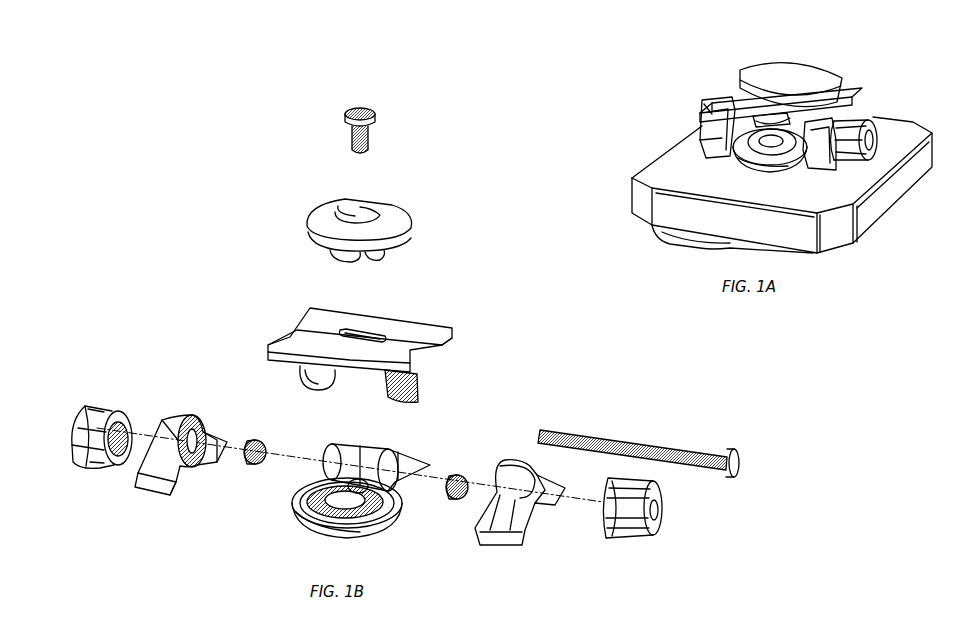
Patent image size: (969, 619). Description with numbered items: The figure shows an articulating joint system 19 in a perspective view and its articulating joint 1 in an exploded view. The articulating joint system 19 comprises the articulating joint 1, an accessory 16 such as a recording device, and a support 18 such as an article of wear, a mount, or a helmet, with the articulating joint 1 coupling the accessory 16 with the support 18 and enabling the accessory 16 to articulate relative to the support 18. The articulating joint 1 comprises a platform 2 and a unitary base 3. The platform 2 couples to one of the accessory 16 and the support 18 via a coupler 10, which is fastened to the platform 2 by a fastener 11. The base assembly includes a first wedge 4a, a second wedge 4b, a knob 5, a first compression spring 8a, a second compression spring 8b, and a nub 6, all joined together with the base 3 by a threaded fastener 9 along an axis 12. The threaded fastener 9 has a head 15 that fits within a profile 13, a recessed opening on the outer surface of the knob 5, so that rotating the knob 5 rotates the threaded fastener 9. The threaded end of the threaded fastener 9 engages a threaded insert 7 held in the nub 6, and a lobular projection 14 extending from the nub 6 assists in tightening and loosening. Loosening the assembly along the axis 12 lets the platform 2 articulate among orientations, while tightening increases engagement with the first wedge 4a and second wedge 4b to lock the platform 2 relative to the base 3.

In FIG. 1A, the articulating joint 1 is at (860, 100).
In FIG. 1B, the articulating joint 1 is at (134, 128).
In FIG. 1A, the platform 2 is at (781, 105).
In FIG. 1B, the platform 2 is at (397, 320).
In FIG. 1A, the base 3 is at (770, 150).
In FIG. 1B, the base 3 is at (403, 452).
In FIG. 1A, the first wedge 4a is at (717, 127).
In FIG. 1B, the first wedge 4a is at (188, 413).
In FIG. 1A, the second wedge 4b is at (819, 144).
In FIG. 1B, the second wedge 4b is at (530, 518).
In FIG. 1A, the knob 5 is at (854, 140).
In FIG. 1B, the knob 5 is at (660, 527).
In FIG. 1B, the nub 6 is at (108, 405).
In FIG. 1B, the threaded insert 7 is at (122, 430).
In FIG. 1B, the first compression spring 8a is at (250, 468).
In FIG. 1B, the second compression spring 8b is at (455, 502).
In FIG. 1B, the threaded fastener 9 is at (665, 443).
In FIG. 1B, the coupler 10 is at (413, 226).
In FIG. 1B, the fastener 11 is at (345, 118).
In FIG. 1A, the axis 12 is at (771, 120).
In FIG. 1B, the axis 12 is at (310, 455).
In FIG. 1B, the profile 13 is at (660, 493).
In FIG. 1B, the lobular projection 14 is at (70, 448).
In FIG. 1B, the head 15 is at (735, 447).
In FIG. 1A, the accessory 16 is at (710, 183).
In FIG. 1A, the support 18 is at (791, 88).
In FIG. 1A, the articulating joint system 19 is at (624, 92).